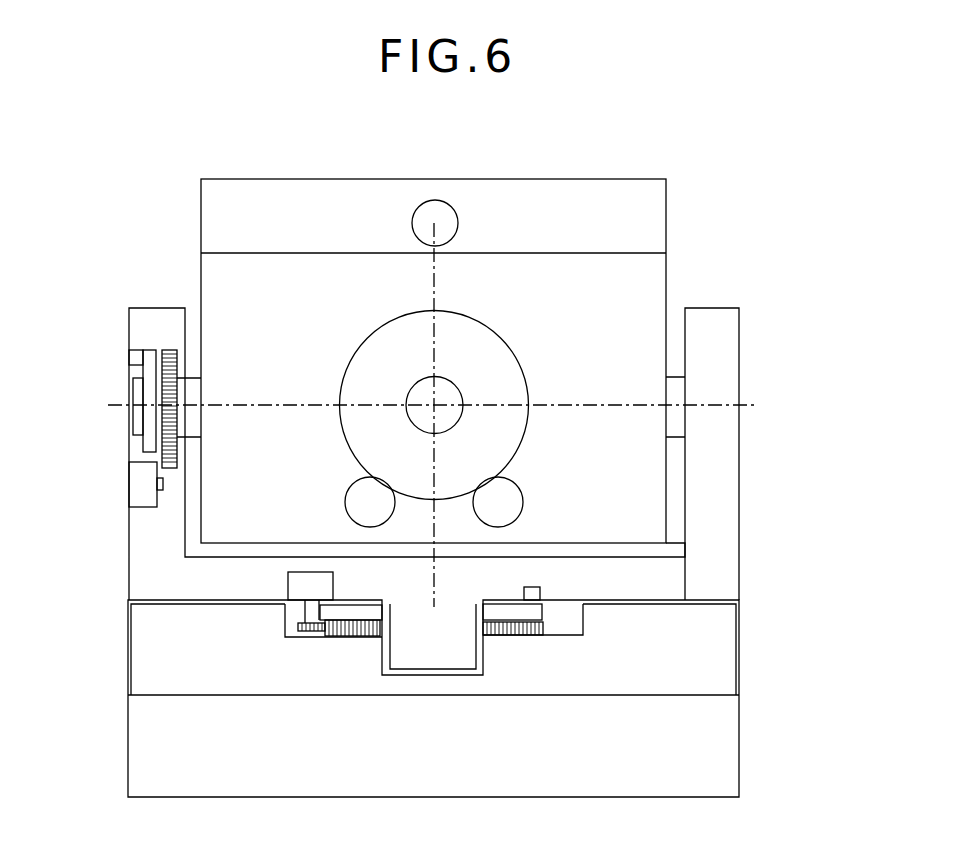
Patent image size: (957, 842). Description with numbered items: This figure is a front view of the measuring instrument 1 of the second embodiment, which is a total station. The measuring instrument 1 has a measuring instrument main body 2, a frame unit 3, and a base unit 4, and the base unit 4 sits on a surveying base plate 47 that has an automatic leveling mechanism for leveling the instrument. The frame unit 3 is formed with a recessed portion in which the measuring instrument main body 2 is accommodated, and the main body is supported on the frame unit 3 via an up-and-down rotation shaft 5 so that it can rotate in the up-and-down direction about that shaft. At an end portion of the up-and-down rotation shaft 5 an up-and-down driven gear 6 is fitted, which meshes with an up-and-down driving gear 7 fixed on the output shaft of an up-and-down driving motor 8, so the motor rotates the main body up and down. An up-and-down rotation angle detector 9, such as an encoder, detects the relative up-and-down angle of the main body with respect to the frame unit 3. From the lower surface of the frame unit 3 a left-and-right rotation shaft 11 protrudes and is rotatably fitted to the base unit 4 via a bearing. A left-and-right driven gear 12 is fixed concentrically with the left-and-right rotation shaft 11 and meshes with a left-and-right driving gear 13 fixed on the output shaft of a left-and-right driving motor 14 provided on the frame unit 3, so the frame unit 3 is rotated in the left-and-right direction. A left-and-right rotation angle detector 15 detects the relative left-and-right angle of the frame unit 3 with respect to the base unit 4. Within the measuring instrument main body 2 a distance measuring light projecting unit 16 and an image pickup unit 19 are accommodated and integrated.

The measuring instrument 1 is at (383, 140).
The measuring instrument main body 2 is at (557, 179).
The frame unit 3 is at (715, 308).
The base unit 4 is at (739, 663).
The up-and-down rotation shaft 5 is at (672, 377).
The up-and-down driven gear 6 is at (170, 350).
The up-and-down driving gear 7 is at (170, 490).
The up-and-down driving motor 8 is at (133, 507).
The up-and-down rotation angle detector 9 is at (140, 340).
The left-and-right rotation shaft 11 is at (477, 657).
The left-and-right driven gear 12 is at (545, 630).
The left-and-right driving gear 13 is at (298, 627).
The left-and-right driving motor 14 is at (288, 583).
The left-and-right rotation angle detector 15 is at (550, 596).
The distance measuring light projecting unit 16 is at (493, 330).
The image pickup unit 19 is at (410, 219).
The surveying base plate 47 is at (740, 758).